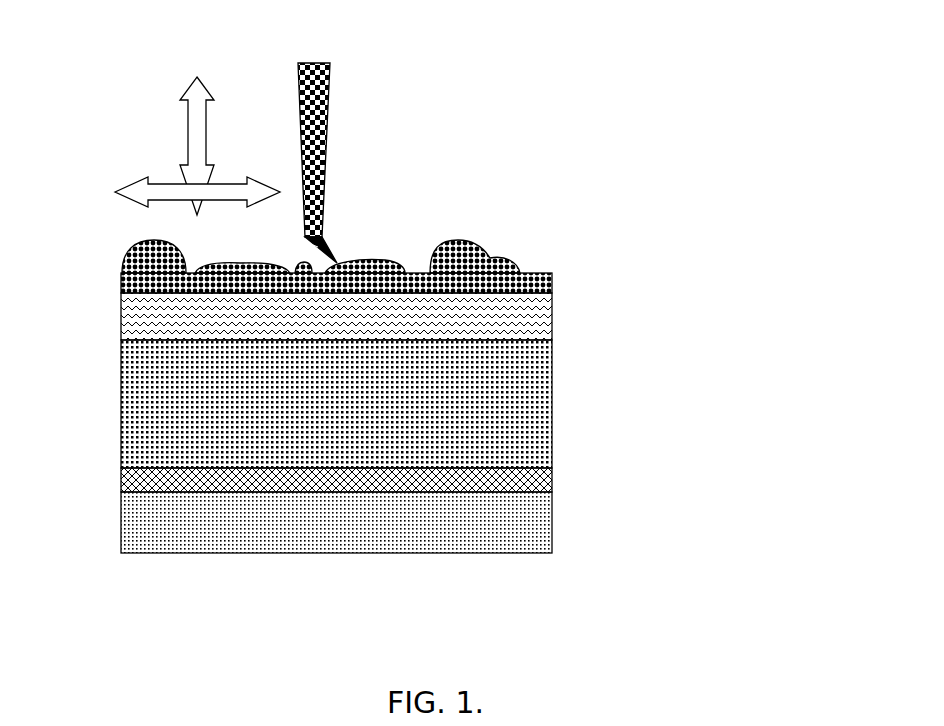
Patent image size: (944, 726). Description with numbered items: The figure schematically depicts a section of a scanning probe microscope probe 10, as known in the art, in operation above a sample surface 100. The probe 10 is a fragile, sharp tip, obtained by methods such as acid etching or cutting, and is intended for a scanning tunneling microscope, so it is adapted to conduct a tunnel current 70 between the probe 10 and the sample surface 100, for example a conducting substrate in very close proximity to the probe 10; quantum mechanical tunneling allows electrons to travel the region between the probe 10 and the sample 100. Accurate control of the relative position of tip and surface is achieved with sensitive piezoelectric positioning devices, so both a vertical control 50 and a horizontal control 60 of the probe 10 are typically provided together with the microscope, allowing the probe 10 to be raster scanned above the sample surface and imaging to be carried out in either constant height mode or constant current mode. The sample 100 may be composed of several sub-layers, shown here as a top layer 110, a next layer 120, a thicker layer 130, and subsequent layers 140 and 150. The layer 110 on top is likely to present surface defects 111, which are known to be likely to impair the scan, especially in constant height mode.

The SPM probe 10 is at (320, 128).
The vertical control 50 is at (192, 120).
The horizontal control 60 is at (190, 203).
The tunnel current 70 is at (335, 242).
The sample surface 100 is at (499, 380).
The top layer 110 is at (547, 278).
The surface defects 111 is at (447, 255).
The next layer 120 is at (500, 328).
The thicker layer 130 is at (507, 400).
The subsequent layer 140 is at (510, 478).
The bottom layer 150 is at (525, 518).